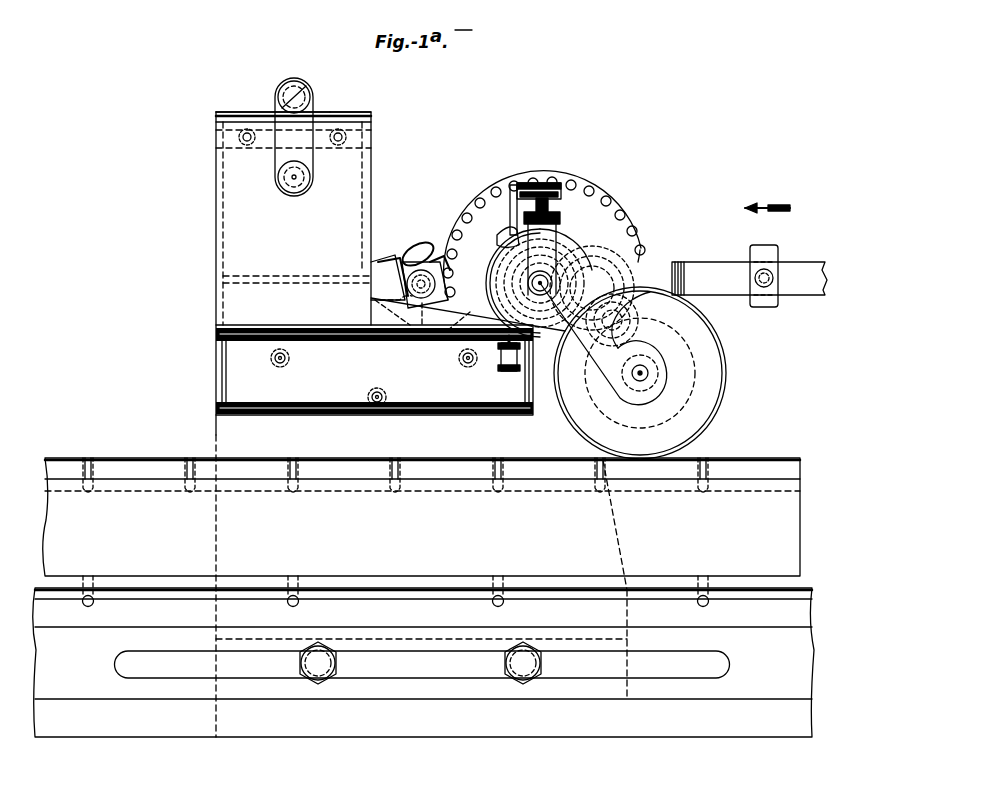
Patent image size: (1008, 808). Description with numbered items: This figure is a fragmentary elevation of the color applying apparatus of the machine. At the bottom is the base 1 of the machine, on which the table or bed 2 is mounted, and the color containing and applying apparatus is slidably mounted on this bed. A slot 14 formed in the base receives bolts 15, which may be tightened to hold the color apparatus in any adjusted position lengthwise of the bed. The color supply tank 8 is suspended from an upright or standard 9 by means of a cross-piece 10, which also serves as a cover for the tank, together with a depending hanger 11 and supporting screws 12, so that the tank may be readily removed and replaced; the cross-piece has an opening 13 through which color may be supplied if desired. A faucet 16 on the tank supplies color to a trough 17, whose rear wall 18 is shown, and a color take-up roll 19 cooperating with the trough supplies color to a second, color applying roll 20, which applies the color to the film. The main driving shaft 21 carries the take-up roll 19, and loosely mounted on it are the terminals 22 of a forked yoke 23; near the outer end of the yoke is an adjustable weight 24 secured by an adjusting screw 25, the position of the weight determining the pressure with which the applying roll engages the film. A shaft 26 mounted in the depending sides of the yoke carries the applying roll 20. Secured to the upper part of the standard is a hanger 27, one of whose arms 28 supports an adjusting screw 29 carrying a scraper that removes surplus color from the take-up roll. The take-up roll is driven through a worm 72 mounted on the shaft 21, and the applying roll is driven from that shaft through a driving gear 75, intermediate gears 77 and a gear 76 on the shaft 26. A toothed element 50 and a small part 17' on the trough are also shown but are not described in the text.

The base 1 is at (210, 722).
The table 2 is at (421, 586).
The color supply tank 8 is at (236, 252).
The upright 9 is at (232, 433).
The cross-piece 10 is at (326, 115).
The depending hanger 11 is at (286, 130).
The supporting screws 12 is at (292, 177).
The opening 13 is at (290, 112).
The slot 14 is at (423, 664).
The bolts 15 is at (320, 680).
The faucet 16 is at (382, 268).
The trough 17 is at (468, 372).
The clip 17' is at (486, 365).
The rear wall 18 is at (386, 346).
The color take-up roll 19 is at (545, 283).
The color applying roll 20 is at (700, 410).
The main driving shaft 21 is at (565, 268).
The terminals 22 is at (603, 344).
The forked yoke 23 is at (806, 290).
The adjustable weight 24 is at (766, 250).
The adjusting screw 25 is at (758, 290).
The shaft 26 is at (650, 374).
The hanger 27 is at (548, 220).
The arms 28 is at (552, 240).
The adjusting screw 29 is at (540, 185).
The gear 50 is at (497, 212).
The worm 72 is at (511, 192).
The driving gear 75 is at (600, 268).
The gear 76 is at (690, 355).
The intermediate gears 77 is at (620, 300).